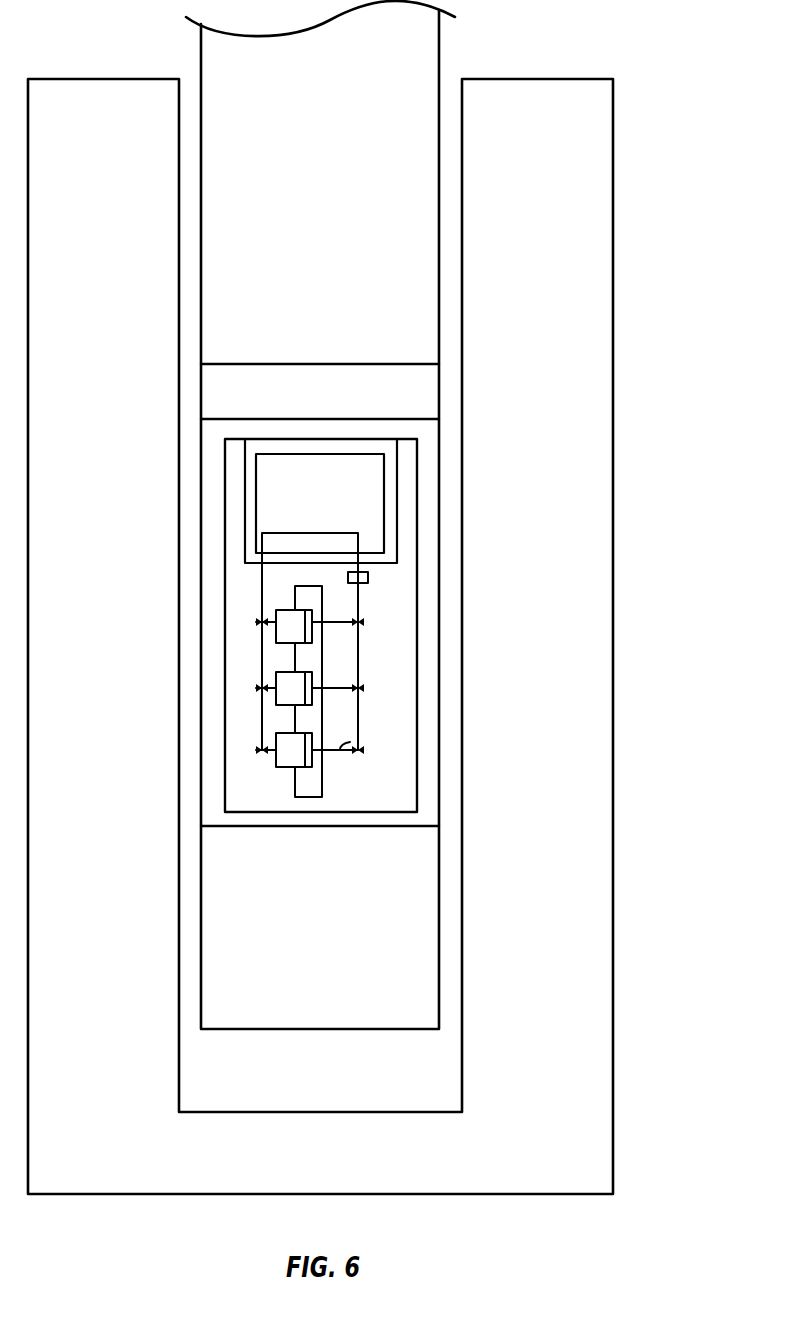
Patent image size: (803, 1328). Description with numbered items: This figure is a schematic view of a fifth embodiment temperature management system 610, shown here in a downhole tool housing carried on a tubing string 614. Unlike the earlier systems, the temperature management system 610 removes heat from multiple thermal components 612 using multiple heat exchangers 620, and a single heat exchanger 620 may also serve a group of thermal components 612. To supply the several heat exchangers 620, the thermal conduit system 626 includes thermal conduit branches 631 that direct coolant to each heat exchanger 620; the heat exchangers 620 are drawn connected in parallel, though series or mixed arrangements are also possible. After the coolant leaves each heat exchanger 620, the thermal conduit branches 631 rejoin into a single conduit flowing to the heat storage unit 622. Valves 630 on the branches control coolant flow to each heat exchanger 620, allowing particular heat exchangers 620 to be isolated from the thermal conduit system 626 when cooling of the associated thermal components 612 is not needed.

The temperature management system 610 is at (400, 641).
The thermal components 612 is at (322, 613).
The tubing string 614 is at (440, 430).
The heat exchangers 620 is at (282, 628).
The heat storage unit 622 is at (298, 515).
The thermal conduit system 626 is at (262, 577).
The valves 630 is at (256, 622).
The thermal conduit branches 631 is at (350, 742).